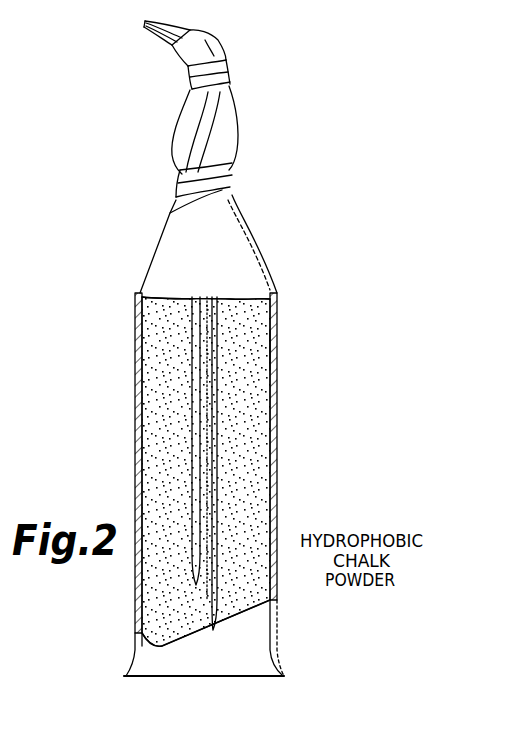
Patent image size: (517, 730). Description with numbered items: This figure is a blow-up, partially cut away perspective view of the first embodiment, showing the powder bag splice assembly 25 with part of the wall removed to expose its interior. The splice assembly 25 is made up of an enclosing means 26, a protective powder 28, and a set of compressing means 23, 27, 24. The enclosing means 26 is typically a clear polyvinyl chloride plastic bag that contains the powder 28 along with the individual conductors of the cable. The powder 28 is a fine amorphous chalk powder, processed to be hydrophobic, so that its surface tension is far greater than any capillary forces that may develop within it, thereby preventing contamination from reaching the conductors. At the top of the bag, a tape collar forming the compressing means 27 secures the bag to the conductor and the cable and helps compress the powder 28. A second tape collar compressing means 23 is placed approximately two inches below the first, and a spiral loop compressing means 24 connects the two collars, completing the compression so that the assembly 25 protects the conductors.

The second tape collar compressing means 23 is at (232, 183).
The spiral loop compressing means 24 is at (207, 120).
The powder bag splice assembly 25 is at (135, 423).
The enclosing means 26 is at (277, 346).
The first tape collar compressing means 27 is at (217, 80).
The protective powder 28 is at (253, 503).